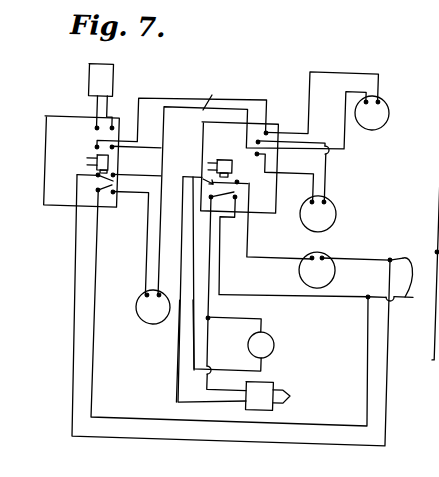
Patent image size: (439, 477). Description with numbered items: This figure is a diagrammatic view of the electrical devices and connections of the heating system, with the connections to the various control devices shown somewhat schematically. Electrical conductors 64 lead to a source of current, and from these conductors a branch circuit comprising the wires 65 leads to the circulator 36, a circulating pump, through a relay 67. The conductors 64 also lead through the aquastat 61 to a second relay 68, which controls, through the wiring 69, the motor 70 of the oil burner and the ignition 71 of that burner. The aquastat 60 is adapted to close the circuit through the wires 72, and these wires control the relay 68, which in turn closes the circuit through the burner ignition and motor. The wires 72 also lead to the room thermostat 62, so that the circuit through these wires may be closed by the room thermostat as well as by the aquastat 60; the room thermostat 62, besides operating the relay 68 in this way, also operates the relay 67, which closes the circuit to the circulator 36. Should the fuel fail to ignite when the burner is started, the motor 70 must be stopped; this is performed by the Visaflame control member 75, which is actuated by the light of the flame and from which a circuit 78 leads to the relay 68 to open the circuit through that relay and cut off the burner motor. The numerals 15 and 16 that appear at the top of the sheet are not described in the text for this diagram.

The reference numeral (adjacent figure) 15 is at (410, 19).
The reference numeral (adjacent figure) 16 is at (338, 13).
The circulator 36 is at (140, 303).
The aquastat 60 is at (342, 104).
The aquastat 61 is at (325, 239).
The room thermostat 62 is at (84, 96).
The electrical conductors 64 is at (322, 266).
The wires 65 is at (230, 325).
The relay 67 is at (66, 161).
The second relay 68 is at (224, 167).
The wiring 69 is at (168, 350).
The motor 70 is at (253, 337).
The ignition 71 is at (272, 384).
The wires 72 is at (213, 94).
The Visaflame control 75 is at (335, 214).
The circuit 78 is at (309, 172).